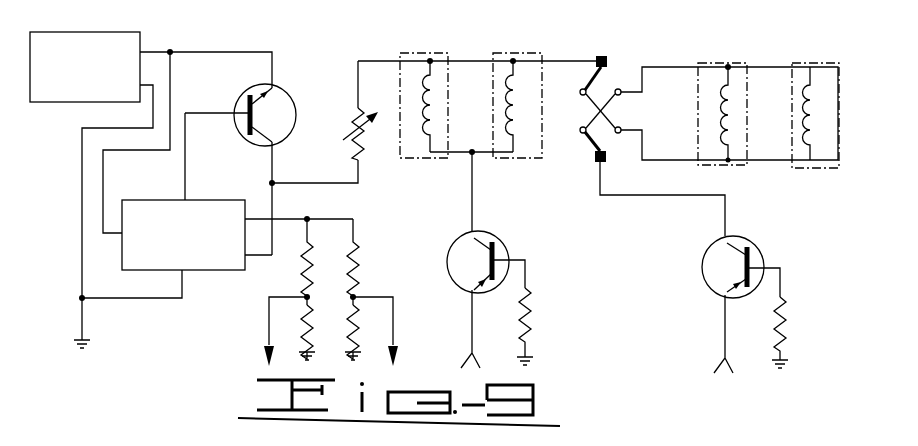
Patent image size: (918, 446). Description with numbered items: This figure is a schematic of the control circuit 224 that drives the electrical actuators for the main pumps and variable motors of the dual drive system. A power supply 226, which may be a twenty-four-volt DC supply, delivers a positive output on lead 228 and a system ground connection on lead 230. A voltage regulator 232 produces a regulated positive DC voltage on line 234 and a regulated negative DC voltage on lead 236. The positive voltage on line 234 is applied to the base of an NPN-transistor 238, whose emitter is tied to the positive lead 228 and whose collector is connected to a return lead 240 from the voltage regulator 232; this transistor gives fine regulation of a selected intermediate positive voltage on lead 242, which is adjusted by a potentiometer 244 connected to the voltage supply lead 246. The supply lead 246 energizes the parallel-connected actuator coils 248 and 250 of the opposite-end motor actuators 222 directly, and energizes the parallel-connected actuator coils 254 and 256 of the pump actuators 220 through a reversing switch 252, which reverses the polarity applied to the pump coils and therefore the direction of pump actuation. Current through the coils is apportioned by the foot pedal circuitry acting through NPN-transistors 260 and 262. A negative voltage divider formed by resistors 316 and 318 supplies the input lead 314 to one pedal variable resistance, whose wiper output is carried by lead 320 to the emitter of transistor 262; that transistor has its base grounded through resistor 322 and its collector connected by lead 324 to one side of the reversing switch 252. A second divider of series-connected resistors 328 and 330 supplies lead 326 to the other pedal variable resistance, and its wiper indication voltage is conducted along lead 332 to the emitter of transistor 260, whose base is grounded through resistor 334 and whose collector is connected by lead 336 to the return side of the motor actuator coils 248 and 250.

The electrical actuator 220 is at (719, 36).
The electrical actuator 222 is at (404, 53).
The control circuit 224 is at (398, 37).
The power supply 226 is at (97, 33).
The lead 228 is at (212, 52).
The lead 230 is at (82, 194).
The voltage regulator 232 is at (203, 204).
The line 234 is at (187, 145).
The lead 236 is at (345, 222).
The NPN-transistor 238 is at (297, 96).
The return lead 240 is at (265, 258).
The lead 242 is at (336, 178).
The potentiometer 244 is at (352, 126).
The voltage supply lead 246 is at (358, 92).
The actuator coil 248 is at (437, 105).
The actuator coil 250 is at (518, 118).
The reversing switch 252 is at (612, 71).
The actuator coil 254 is at (726, 100).
The actuator coil 256 is at (808, 112).
The NPN-transistor 260 is at (510, 251).
The NPN-transistor 262 is at (768, 251).
The input lead 314 is at (396, 332).
The resistor 316 is at (357, 268).
The resistor 318 is at (357, 333).
The lead 320 is at (722, 336).
The resistor 322 is at (785, 317).
The lead 324 is at (680, 197).
The lead 326 is at (269, 329).
The resistor 328 is at (312, 252).
The resistor 330 is at (309, 337).
The lead 332 is at (474, 327).
The resistor 334 is at (530, 311).
The lead 336 is at (474, 211).